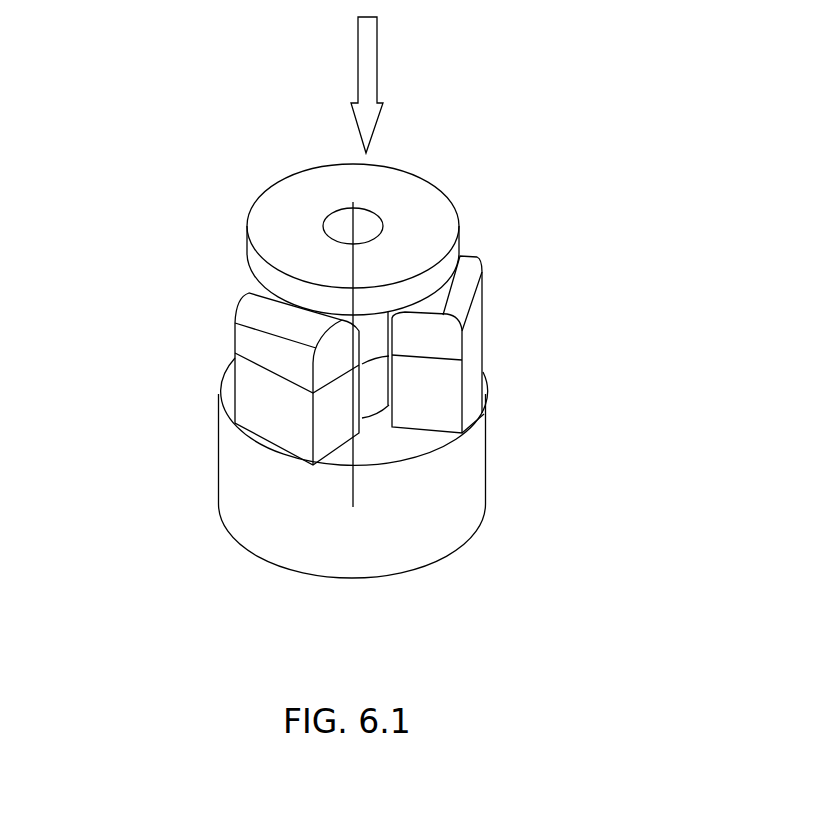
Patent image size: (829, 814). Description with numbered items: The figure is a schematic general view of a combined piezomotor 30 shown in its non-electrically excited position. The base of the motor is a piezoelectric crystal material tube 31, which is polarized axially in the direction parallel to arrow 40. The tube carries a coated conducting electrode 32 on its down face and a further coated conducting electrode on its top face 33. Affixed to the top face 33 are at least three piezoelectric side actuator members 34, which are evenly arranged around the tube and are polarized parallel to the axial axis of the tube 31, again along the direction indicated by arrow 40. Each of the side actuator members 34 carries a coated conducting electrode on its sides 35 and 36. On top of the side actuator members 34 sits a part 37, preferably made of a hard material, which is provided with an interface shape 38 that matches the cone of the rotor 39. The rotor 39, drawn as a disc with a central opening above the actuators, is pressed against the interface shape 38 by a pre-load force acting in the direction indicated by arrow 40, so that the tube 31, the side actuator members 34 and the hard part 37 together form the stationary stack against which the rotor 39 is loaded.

The combined piezomotor 30 is at (160, 246).
The piezoelectric crystal material tube 31 is at (483, 463).
The coated conducting electrode 32 is at (420, 568).
The top face 33 is at (418, 452).
The piezoelectric side actuator members 34 is at (480, 362).
The side 35 is at (435, 413).
The side 36 is at (330, 427).
The part 37 is at (481, 297).
The interface shape 38 is at (473, 268).
The rotor 39 is at (456, 213).
The arrow 40 is at (398, 50).